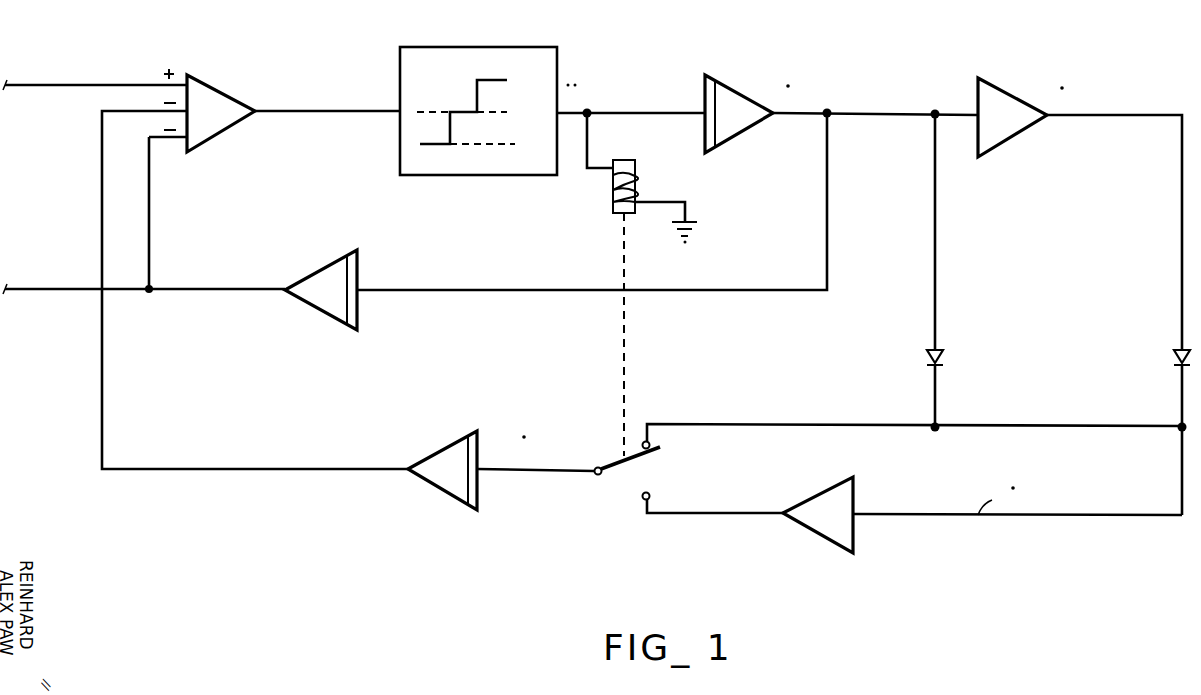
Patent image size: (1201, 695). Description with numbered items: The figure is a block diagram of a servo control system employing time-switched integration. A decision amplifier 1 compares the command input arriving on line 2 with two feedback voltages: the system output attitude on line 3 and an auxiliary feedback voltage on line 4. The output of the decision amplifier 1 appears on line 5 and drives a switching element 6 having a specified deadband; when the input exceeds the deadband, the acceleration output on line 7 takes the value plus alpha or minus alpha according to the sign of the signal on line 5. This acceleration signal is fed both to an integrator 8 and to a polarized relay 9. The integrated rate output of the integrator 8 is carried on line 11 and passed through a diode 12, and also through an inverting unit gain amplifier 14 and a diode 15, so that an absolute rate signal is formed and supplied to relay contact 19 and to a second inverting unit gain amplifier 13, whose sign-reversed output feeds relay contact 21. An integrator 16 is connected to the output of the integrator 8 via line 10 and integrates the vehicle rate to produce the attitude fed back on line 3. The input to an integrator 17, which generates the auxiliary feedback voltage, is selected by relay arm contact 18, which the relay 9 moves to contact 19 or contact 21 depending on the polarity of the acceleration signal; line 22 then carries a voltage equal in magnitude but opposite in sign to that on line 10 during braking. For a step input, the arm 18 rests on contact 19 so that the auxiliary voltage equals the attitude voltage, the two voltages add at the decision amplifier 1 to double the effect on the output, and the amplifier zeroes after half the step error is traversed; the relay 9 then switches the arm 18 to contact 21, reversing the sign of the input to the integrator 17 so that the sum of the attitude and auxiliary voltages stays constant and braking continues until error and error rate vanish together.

The decision amplifier 1 is at (210, 86).
The input line 2 is at (60, 84).
The feedback line 3 is at (65, 289).
The auxiliary feedback line 4 is at (103, 434).
The output line 5 is at (296, 111).
The switching element 6 is at (430, 47).
The acceleration output line 7 is at (625, 113).
The integrator 8 is at (735, 92).
The polarized relay 9 is at (614, 212).
The line 10 is at (440, 290).
The line 11 is at (937, 248).
The diode 12 is at (945, 357).
The amplifier 13 is at (858, 503).
The amplifier 14 is at (990, 152).
The diode 15 is at (1175, 347).
The integrator 16 is at (320, 265).
The integrator 17 is at (447, 496).
The relay arm contact 18 is at (620, 459).
The relay contact 19 is at (650, 441).
The relay contact 21 is at (640, 500).
The line 22 is at (525, 476).